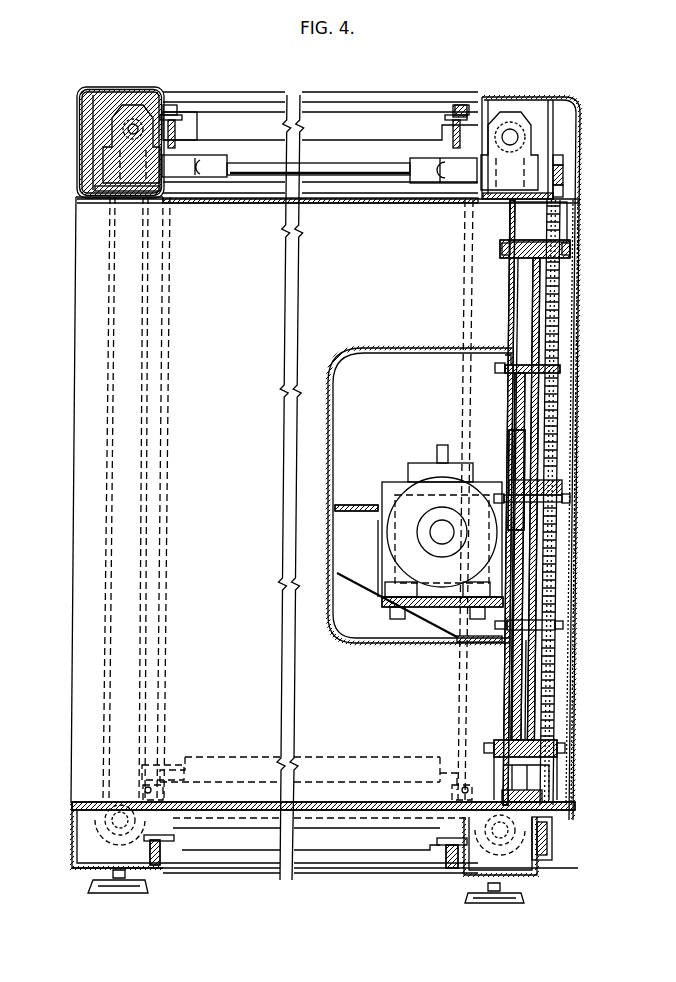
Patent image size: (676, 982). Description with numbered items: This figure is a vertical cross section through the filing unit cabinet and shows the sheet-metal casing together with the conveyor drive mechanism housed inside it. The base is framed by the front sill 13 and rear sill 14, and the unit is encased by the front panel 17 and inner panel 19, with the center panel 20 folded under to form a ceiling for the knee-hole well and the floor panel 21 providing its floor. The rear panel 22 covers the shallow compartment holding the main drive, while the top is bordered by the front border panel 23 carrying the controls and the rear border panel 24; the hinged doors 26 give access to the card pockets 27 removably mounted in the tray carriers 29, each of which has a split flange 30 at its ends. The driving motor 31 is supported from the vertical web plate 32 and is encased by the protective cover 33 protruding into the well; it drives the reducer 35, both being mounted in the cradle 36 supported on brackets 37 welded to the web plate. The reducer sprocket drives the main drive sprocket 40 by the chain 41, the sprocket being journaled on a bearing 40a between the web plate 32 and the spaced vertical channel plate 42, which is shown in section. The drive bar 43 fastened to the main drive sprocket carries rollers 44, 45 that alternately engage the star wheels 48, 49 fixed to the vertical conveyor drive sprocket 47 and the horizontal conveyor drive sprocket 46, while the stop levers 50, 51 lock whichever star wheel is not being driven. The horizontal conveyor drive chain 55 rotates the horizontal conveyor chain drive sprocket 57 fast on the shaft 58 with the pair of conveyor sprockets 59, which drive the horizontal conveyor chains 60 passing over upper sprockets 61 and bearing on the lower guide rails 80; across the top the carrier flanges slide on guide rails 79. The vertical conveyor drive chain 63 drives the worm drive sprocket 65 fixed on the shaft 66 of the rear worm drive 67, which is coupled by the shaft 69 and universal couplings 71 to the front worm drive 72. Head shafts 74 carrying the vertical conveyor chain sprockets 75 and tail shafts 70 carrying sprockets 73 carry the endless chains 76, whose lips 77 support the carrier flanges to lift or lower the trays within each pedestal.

The front sill 13 is at (77, 836).
The rear sill 14 is at (538, 878).
The front panel 17 is at (73, 523).
The inner panel 19 is at (185, 402).
The center panel 20 is at (77, 163).
The floor panel 21 is at (350, 806).
The rear panel 22 is at (570, 522).
The front border panel 23 is at (150, 88).
The rear border panel 24 is at (555, 96).
The door 26 is at (350, 92).
The card pocket 27 is at (245, 848).
The tray carrier 29 is at (250, 110).
The split flange 30 is at (455, 112).
The driving motor 31 is at (395, 548).
The web plate 32 is at (509, 290).
The protective cover 33 is at (358, 350).
The reducer 35 is at (408, 470).
The cradle 36 is at (380, 600).
The bracket 37 is at (363, 577).
The main drive sprocket 40 is at (510, 475).
The bearing 40a is at (543, 485).
The chain 41 is at (510, 347).
The channel plate 42 is at (565, 224).
The drive bar 43 is at (511, 420).
The roller 44 is at (553, 330).
The roller 45 is at (538, 622).
The horizontal conveyor drive sprocket 46 is at (553, 592).
The vertical conveyor drive sprocket 47 is at (555, 260).
The star wheel 48 is at (543, 422).
The star wheel 49 is at (543, 560).
The stop lever 50 is at (512, 275).
The stop lever 51 is at (510, 712).
The horizontal conveyor drive chain 55 is at (543, 793).
The horizontal conveyor chain drive sprocket 57 is at (543, 832).
The shaft 58 is at (528, 890).
The conveyor sprocket 59 is at (163, 790).
The horizontal conveyor chain 60 is at (182, 107).
The sprocket 61 is at (460, 160).
The vertical conveyor drive chain 63 is at (560, 162).
The vertical conveyor worm drive sprocket 65 is at (560, 172).
The shaft 66 is at (580, 140).
The rear worm drive 67 is at (512, 135).
The shaft 69 is at (330, 170).
The tail shaft 70 is at (118, 820).
The universal coupling 71 is at (205, 160).
The front worm drive 72 is at (160, 103).
The sprocket 73 is at (76, 858).
The head shaft 74 is at (548, 100).
The vertical conveyor chain sprocket 75 is at (495, 108).
The endless chain 76 is at (110, 305).
The lip 77 is at (135, 840).
The guide rail 79 is at (178, 130).
The guide rail 80 is at (158, 862).